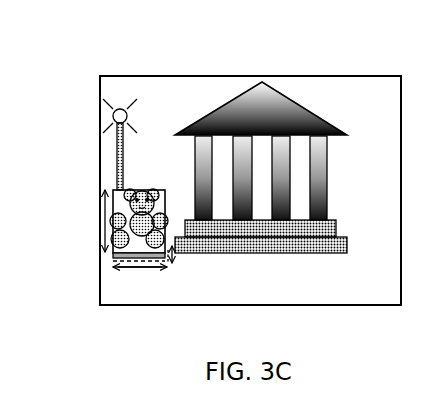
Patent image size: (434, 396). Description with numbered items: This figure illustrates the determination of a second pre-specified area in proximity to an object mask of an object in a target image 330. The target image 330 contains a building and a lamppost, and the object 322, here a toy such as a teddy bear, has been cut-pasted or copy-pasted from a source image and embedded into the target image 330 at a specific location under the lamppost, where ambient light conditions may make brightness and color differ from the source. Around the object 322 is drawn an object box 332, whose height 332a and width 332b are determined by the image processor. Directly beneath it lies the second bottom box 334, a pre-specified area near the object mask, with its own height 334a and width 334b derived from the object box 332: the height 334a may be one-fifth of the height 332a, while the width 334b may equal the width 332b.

The target image 330 is at (260, 76).
The object 322 is at (118, 233).
The object box 332 is at (112, 218).
The height of the object box 332a is at (116, 221).
The width of the object box 332b is at (125, 268).
The second bottom box 334 is at (167, 263).
The height of the second bottom box 334a is at (175, 257).
The width of the second bottom box 334b is at (142, 268).